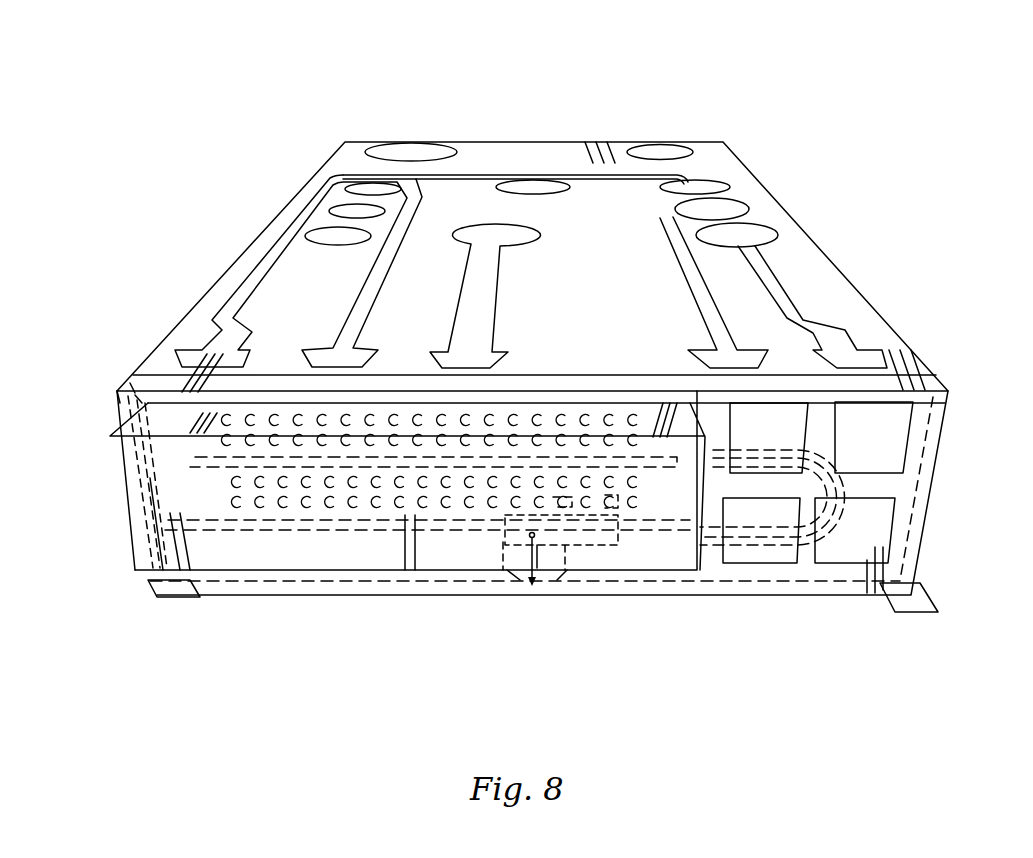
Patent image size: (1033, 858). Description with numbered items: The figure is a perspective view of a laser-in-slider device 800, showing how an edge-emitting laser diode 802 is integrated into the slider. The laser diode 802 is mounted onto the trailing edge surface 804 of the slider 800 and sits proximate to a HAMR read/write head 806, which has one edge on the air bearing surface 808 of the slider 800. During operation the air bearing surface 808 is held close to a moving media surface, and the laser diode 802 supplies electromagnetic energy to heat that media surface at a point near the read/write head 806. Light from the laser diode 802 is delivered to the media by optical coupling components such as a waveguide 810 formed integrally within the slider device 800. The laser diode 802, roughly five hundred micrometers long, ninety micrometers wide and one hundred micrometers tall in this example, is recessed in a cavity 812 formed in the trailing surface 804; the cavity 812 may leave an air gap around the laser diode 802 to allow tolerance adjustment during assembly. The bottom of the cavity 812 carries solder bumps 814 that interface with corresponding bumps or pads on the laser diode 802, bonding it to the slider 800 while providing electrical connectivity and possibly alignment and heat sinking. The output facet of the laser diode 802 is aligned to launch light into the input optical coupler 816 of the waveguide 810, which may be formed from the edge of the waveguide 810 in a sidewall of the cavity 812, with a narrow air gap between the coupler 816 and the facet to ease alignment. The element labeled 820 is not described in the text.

The laser-in-slider device 800 is at (722, 80).
The edge-emitting laser diode 802 is at (140, 547).
The trailing edge surface 804 is at (182, 605).
The HAMR read/write head 806 is at (545, 578).
The air bearing surface 808 is at (928, 608).
The waveguide 810 is at (772, 540).
The cavity 812 is at (143, 458).
The solder bumps 814 is at (283, 508).
The input optical coupler 816 is at (690, 470).
The internal circuit board 820 is at (358, 522).